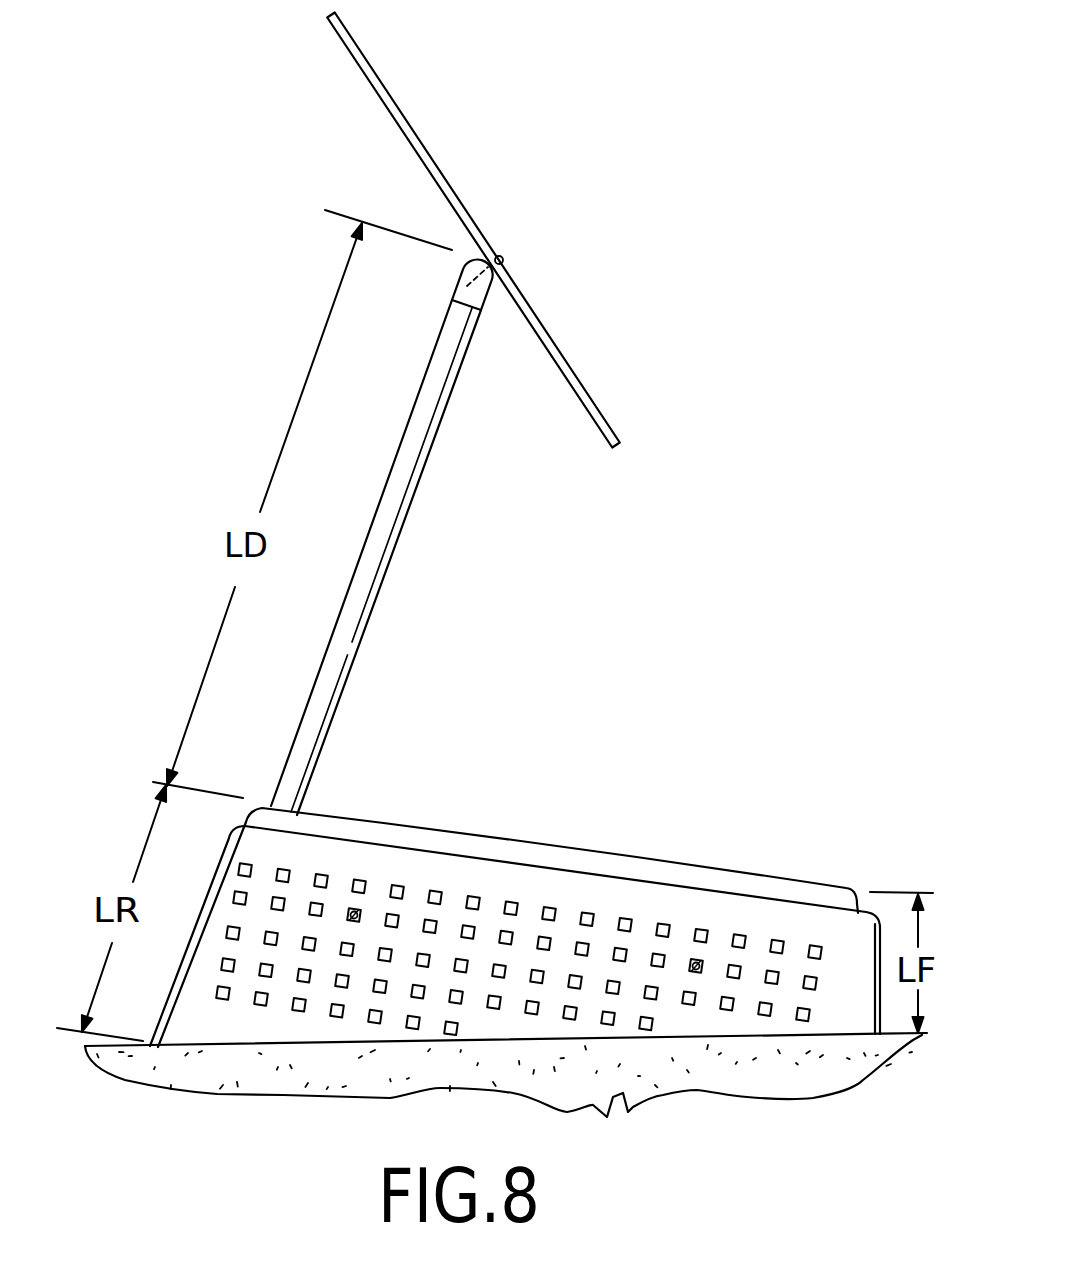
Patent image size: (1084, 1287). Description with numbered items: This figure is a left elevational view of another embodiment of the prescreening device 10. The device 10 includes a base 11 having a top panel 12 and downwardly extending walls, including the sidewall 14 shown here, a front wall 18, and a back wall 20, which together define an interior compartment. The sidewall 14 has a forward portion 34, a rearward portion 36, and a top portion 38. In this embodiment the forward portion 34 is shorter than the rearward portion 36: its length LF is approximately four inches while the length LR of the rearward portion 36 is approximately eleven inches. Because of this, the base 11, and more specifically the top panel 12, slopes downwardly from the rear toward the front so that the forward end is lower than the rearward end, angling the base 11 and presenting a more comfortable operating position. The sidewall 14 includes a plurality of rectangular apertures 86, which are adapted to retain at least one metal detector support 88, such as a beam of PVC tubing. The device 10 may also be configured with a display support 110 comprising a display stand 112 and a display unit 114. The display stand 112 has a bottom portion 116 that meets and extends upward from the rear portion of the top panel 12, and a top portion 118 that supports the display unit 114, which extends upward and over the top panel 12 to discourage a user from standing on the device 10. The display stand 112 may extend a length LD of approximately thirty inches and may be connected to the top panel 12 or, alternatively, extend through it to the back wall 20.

The prescreening device 10 is at (725, 591).
The base 11 is at (785, 816).
The top panel 12 is at (543, 847).
The sidewall 14 is at (598, 938).
The front wall 18 is at (880, 920).
The back wall 20 is at (188, 946).
The forward portion 34 is at (852, 967).
The rearward portion 36 is at (227, 883).
The top portion 38 is at (685, 900).
The apertures 86 is at (318, 873).
The metal detector support 88 is at (356, 916).
The display support 110 is at (412, 553).
The display stand 112 is at (423, 418).
The display unit 114 is at (450, 190).
The bottom portion 116 is at (301, 758).
The top portion 118 is at (443, 330).